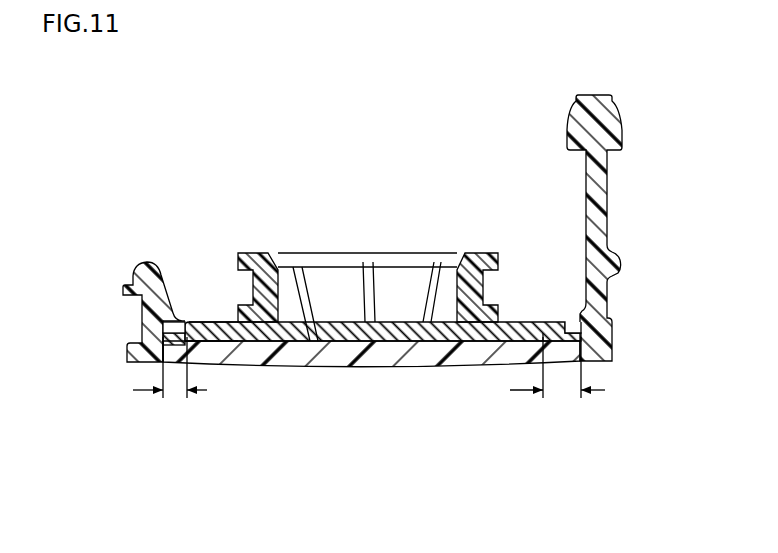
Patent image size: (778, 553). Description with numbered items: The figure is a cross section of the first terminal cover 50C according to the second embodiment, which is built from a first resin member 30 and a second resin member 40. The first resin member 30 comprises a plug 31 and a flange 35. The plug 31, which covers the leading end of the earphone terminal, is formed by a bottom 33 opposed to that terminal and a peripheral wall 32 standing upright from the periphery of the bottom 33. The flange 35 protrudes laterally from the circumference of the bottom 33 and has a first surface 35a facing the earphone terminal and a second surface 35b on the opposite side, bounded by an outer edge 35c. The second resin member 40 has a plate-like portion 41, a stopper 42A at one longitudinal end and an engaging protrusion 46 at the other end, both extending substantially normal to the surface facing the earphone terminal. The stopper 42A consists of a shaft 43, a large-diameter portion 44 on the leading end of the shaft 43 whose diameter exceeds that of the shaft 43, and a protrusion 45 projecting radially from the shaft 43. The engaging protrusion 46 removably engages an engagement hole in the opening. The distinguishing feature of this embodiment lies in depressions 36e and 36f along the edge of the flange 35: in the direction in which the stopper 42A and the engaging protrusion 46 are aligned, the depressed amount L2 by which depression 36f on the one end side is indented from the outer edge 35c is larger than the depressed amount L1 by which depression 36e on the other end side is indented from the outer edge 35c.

The first terminal cover 50C is at (505, 105).
The first resin member 30 is at (247, 221).
The plug 31 is at (462, 212).
The peripheral wall 32 is at (462, 290).
The bottom 33 is at (393, 322).
The flange 35 is at (527, 321).
The first surface 35a is at (214, 322).
The second surface 35b is at (222, 348).
The outer edge 35c is at (172, 339).
The depression 36e is at (166, 328).
The depression 36f is at (582, 325).
The second resin member 40 is at (423, 392).
The plate-like portion 41 is at (367, 357).
The stopper 42A is at (679, 117).
The shaft 43 is at (597, 215).
The large-diameter portion 44 is at (606, 136).
The protrusion 45 is at (617, 262).
The engaging protrusion 46 is at (152, 280).
The depressed amount L1 is at (170, 379).
The depressed amount L2 is at (557, 379).